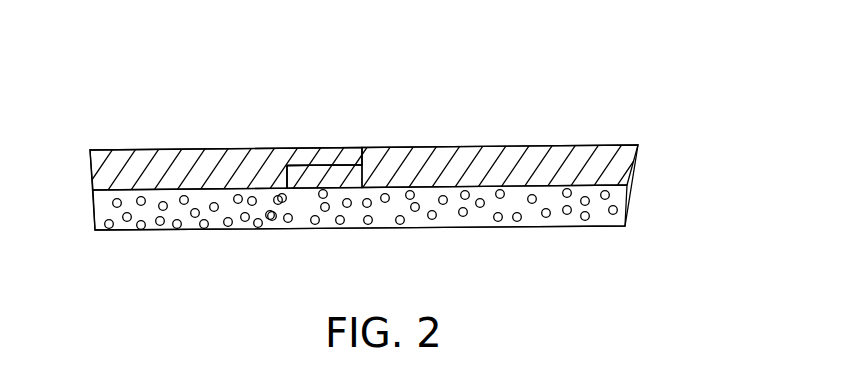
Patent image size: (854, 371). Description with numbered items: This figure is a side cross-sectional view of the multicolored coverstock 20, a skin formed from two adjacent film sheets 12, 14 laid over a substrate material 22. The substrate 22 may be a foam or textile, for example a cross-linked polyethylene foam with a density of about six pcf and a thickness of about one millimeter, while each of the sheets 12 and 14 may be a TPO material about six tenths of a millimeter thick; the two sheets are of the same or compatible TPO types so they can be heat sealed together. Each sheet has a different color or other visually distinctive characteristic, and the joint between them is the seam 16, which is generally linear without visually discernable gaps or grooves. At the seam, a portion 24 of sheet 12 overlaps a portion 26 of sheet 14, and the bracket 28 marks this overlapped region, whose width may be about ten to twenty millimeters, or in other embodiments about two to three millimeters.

The multicolored coverstock 20 is at (646, 120).
The film sheet 12 is at (197, 149).
The film sheet 14 is at (505, 148).
The seam 16 is at (364, 134).
The substrate material 22 is at (460, 228).
The portion of sheet 12 24 is at (303, 149).
The portion of sheet 14 26 is at (317, 162).
The overlap width 28 is at (362, 102).